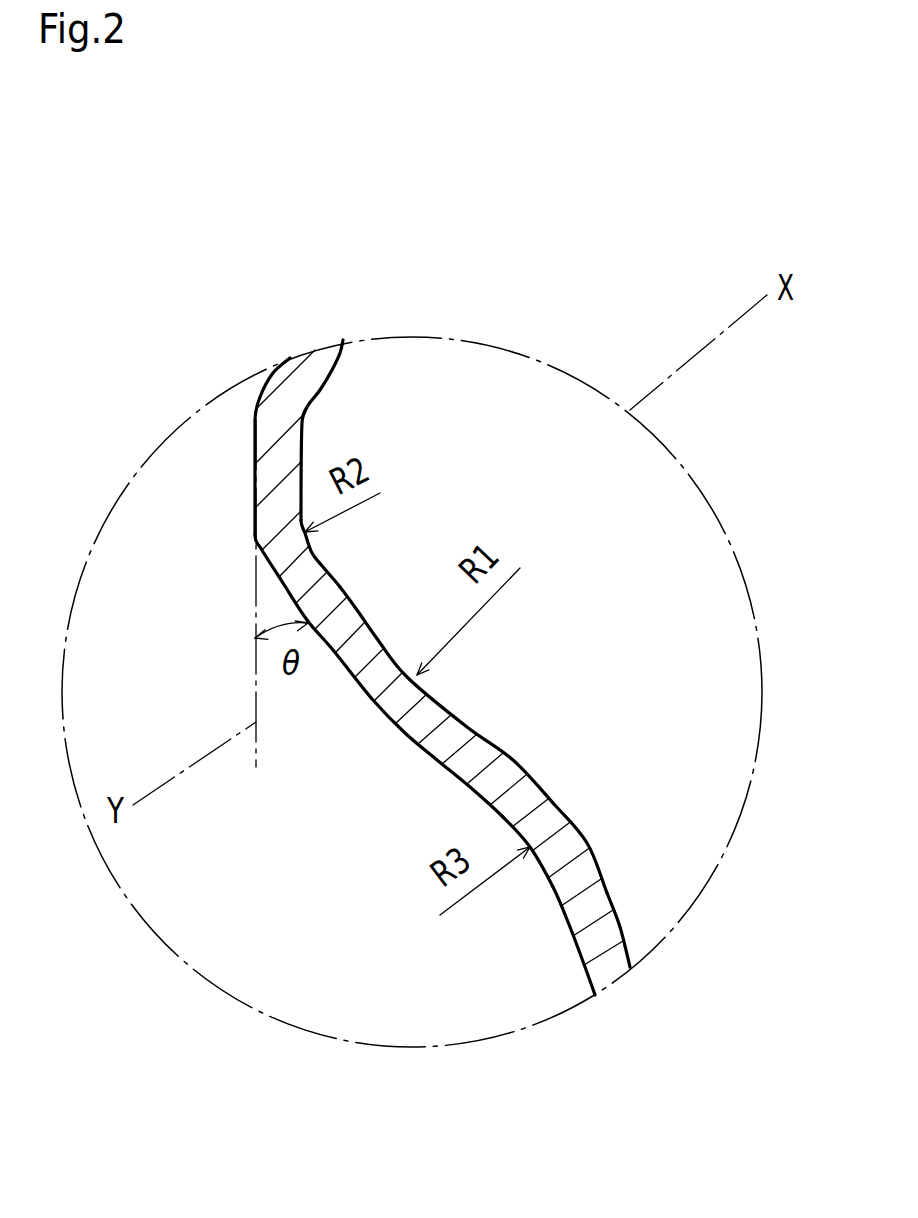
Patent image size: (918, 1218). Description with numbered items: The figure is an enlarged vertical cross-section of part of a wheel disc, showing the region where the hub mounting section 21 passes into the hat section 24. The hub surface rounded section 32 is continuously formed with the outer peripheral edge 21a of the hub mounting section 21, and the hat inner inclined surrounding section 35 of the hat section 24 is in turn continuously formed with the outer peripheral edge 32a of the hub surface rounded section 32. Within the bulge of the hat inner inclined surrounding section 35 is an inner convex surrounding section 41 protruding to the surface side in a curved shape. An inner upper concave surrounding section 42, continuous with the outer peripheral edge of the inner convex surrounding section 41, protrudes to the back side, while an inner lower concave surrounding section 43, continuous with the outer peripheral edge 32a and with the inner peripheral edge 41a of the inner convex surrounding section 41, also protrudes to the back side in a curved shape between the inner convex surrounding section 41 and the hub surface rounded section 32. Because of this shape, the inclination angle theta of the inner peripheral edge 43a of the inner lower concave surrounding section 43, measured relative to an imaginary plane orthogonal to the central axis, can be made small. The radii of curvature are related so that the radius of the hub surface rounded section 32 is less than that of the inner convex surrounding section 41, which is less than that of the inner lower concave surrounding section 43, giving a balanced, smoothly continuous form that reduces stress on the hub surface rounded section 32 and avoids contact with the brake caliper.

The hub mounting section 21 is at (275, 445).
The outer peripheral edge of the hub mounting section 21a is at (277, 502).
The hub surface rounded section 32 is at (277, 545).
The outer peripheral edge of the hub surface rounded section 32a is at (312, 573).
The inner lower concave surrounding section 43 is at (388, 703).
The inner peripheral edge of the inner lower concave surrounding section 43a is at (336, 588).
The inner convex surrounding section 41 is at (550, 820).
The inner peripheral edge of the inner convex surrounding section 41a is at (493, 770).
The hat section 24 is at (597, 843).
The inner upper concave surrounding section 42 is at (607, 920).
The hat inner inclined surrounding section 35 is at (577, 957).